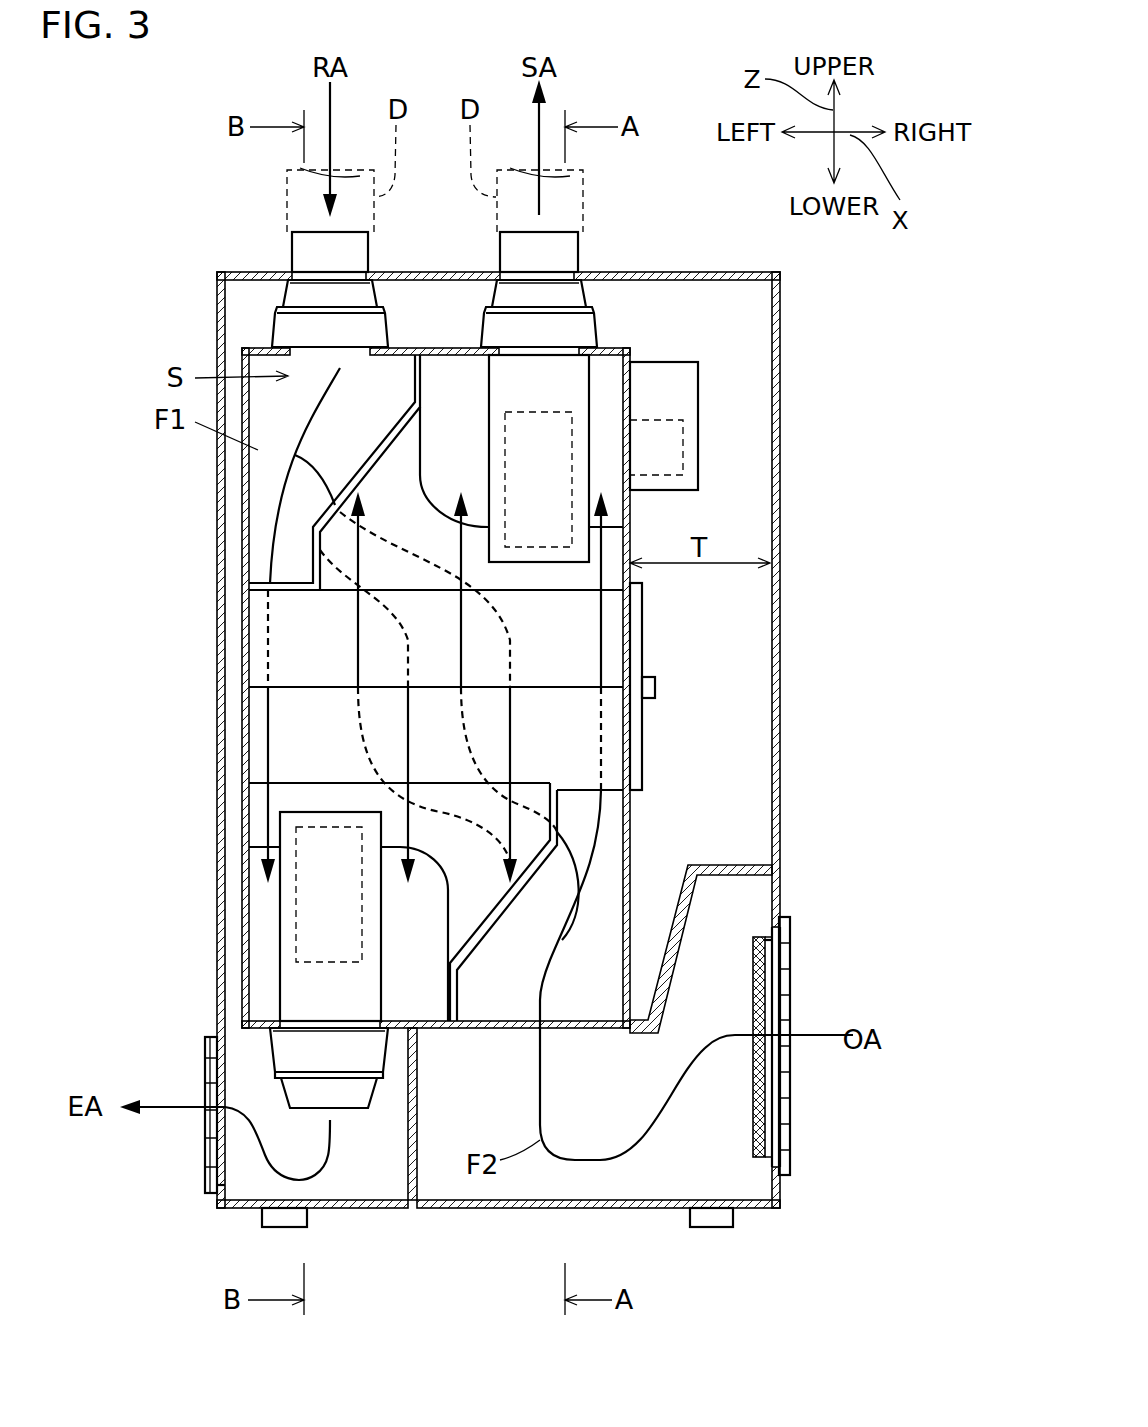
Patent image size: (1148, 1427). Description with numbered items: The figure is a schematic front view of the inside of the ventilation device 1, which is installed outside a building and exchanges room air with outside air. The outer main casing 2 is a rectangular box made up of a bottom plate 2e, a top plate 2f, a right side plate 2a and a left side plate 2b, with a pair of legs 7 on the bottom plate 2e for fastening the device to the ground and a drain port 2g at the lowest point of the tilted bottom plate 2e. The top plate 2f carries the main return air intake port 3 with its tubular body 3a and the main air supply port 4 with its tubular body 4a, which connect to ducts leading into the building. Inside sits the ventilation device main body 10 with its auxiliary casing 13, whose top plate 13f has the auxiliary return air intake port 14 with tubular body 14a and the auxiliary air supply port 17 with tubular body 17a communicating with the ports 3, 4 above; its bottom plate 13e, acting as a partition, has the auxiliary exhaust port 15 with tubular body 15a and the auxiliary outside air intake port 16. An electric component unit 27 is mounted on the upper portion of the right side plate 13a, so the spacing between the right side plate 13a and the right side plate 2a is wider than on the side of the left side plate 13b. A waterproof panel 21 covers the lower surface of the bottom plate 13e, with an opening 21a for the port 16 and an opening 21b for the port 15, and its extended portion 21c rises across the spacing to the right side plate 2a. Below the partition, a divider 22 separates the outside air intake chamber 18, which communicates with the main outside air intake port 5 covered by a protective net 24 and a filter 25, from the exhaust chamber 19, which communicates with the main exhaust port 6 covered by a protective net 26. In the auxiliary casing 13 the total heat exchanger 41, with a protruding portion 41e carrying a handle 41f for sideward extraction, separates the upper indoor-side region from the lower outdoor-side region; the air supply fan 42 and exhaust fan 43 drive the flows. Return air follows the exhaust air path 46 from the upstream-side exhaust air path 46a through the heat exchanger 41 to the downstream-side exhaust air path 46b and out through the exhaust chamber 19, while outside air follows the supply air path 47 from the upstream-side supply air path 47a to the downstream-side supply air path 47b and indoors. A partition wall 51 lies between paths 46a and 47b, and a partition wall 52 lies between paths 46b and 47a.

The ventilation device 1 is at (694, 92).
The main casing 2 is at (496, 741).
The right side plate 2a is at (781, 490).
The left side plate 2b is at (220, 608).
The bottom plate 2e is at (512, 1208).
The top plate 2f is at (730, 272).
The drain port 2g is at (383, 1208).
The main return air intake port 3 is at (305, 262).
The tubular body 3a is at (305, 235).
The main air supply port 4 is at (580, 258).
The tubular body 4a is at (578, 230).
The main outside air intake port 5 is at (778, 1157).
The main exhaust port 6 is at (212, 1188).
The legs 7 is at (275, 1228).
The ventilation device main body 10 is at (642, 821).
The auxiliary casing 13 is at (403, 659).
The right side plate 13a is at (630, 507).
The left side plate 13b is at (236, 565).
The bottom plate 13e is at (453, 1030).
The top plate 13f is at (433, 348).
The auxiliary return air intake port 14 is at (257, 314).
The tubular body 14a is at (288, 293).
The auxiliary exhaust port 15 is at (239, 1040).
The tubular body 15a is at (270, 1050).
The auxiliary outside air intake port 16 is at (570, 1018).
The auxiliary air supply port 17 is at (657, 272).
The tubular body 17a is at (598, 297).
The outside air intake chamber 18 is at (655, 1175).
The exhaust chamber 19 is at (352, 1190).
The waterproof panel 21 is at (556, 1020).
The opening 21a is at (573, 1033).
The opening 21b is at (392, 1030).
The extended portion 21c is at (672, 962).
The divider 22 is at (418, 1143).
The protective net 24 is at (791, 933).
The filter 25 is at (755, 938).
The protective net 26 is at (206, 1140).
The electric component unit 27 is at (698, 370).
The total heat exchanger 41 is at (430, 686).
The portion 41e is at (643, 623).
The handle 41f is at (656, 688).
The air supply fan 42 is at (578, 395).
The exhaust fan 43 is at (288, 937).
The exhaust air path 46 is at (349, 638).
The upstream-side exhaust air path 46a is at (246, 457).
The downstream-side exhaust air path 46b is at (248, 895).
The supply air path 47 is at (727, 718).
The upstream-side supply air path 47a is at (611, 918).
The downstream-side supply air path 47b is at (629, 454).
The partition wall 51 is at (392, 423).
The partition wall 52 is at (478, 885).